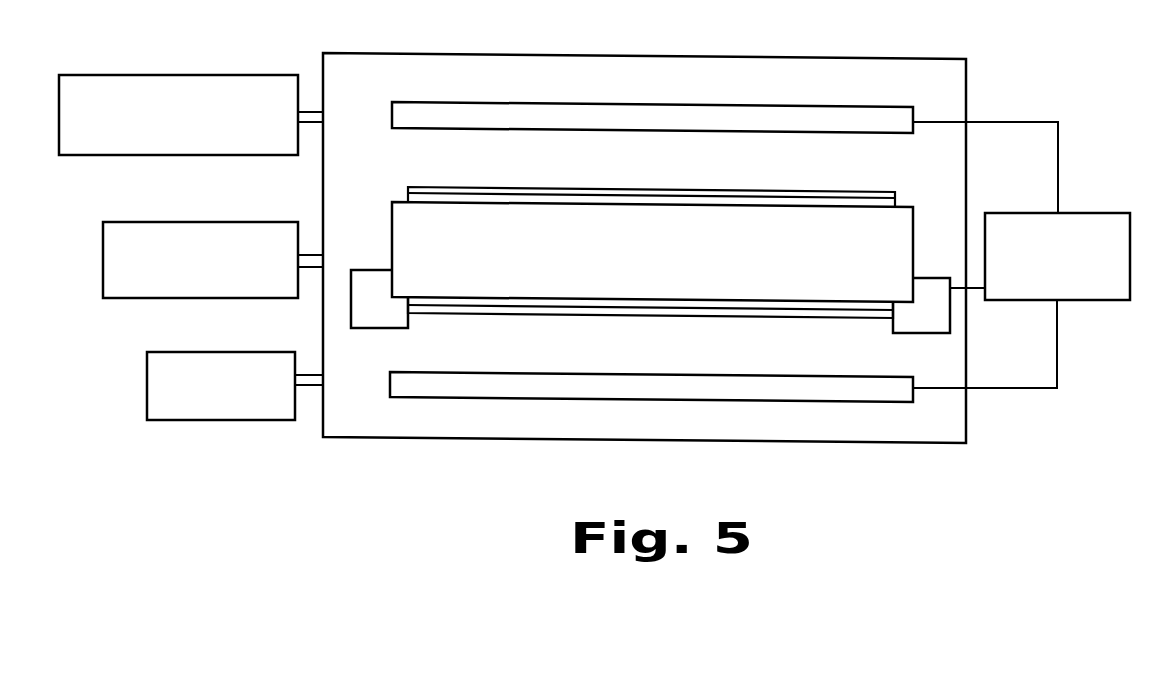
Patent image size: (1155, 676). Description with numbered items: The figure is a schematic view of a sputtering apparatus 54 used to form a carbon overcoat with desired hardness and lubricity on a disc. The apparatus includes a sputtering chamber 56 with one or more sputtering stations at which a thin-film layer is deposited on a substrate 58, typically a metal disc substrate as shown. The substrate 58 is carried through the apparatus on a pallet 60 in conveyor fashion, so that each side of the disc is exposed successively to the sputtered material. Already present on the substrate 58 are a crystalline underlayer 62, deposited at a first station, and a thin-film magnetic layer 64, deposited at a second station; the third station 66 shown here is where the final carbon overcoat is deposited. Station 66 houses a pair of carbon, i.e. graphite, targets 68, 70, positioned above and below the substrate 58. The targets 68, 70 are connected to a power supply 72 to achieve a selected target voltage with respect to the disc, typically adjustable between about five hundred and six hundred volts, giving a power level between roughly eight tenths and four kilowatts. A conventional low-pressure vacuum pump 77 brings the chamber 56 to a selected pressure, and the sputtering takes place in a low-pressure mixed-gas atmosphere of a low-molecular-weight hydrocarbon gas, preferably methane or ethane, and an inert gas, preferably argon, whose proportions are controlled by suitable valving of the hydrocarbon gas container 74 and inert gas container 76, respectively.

The sputtering apparatus 54 is at (1006, 97).
The sputtering chamber 56 is at (356, 52).
The substrate 58 is at (711, 282).
The pallet 60 is at (912, 316).
The crystalline underlayer 62 is at (820, 205).
The thin-film magnetic layer 64 is at (685, 190).
The third station 66 is at (661, 70).
The graphite target 68 is at (742, 120).
The graphite target 70 is at (600, 382).
The power supply 72 is at (1028, 222).
The hydrocarbon gas container 74 is at (225, 82).
The inert gas container 76 is at (220, 228).
The vacuum pump 77 is at (183, 350).